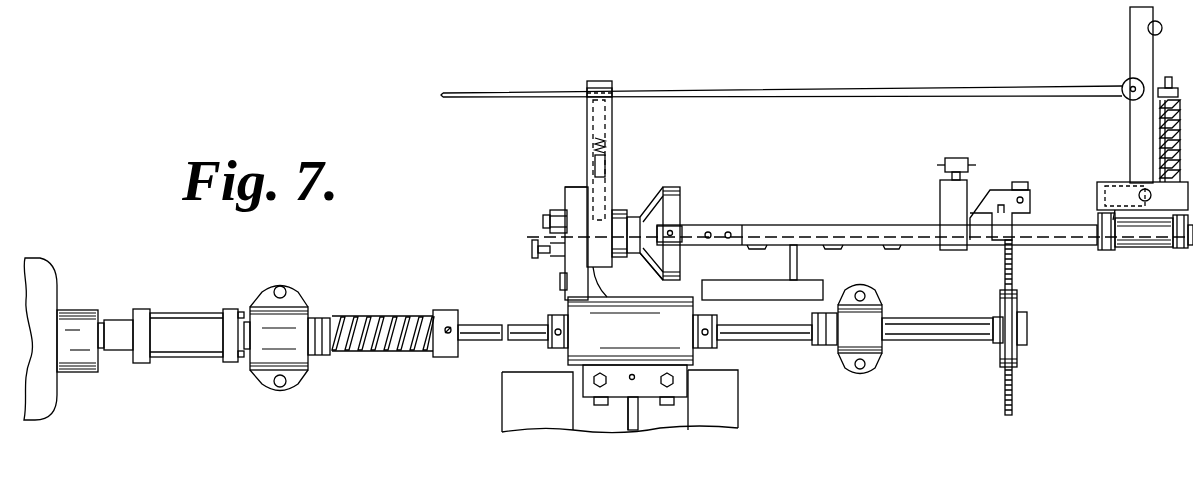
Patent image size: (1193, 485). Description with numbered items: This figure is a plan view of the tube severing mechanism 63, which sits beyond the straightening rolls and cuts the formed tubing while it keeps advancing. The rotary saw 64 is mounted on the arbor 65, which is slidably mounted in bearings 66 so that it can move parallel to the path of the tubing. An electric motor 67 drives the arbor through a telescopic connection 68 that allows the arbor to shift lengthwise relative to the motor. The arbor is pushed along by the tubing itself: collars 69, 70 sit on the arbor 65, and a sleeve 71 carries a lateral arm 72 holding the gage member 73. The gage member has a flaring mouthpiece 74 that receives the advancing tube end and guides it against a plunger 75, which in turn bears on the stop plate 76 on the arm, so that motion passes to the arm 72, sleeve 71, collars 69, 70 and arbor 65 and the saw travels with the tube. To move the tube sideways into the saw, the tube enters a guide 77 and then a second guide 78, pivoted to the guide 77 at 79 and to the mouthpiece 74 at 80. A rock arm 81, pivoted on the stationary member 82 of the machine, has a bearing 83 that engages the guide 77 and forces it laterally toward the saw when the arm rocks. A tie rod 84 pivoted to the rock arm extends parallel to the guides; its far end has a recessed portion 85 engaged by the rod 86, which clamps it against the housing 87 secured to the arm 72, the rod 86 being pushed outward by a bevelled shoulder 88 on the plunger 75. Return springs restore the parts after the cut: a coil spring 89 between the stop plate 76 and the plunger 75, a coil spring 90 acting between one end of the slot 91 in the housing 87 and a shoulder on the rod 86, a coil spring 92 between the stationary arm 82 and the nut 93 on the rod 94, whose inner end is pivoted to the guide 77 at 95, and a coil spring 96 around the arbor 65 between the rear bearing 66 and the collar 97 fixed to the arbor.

The tube severing mechanism 63 is at (776, 358).
The rotary saw 64 is at (1012, 402).
The arbor 65 is at (918, 330).
The bearings 66 is at (262, 348).
The electric motor 67 is at (73, 383).
The telescopic connection 68 is at (178, 353).
The collar 69 is at (557, 350).
The collar 70 is at (707, 350).
The sleeve 71 is at (642, 350).
The lateral arm 72 is at (585, 290).
The gage member 73 is at (640, 200).
The flaring mouthpiece 74 is at (668, 205).
The plunger 75 is at (665, 252).
The stop plate 76 is at (550, 227).
The guide 77 is at (1128, 250).
The second guide 78 is at (830, 225).
The pivot 79 is at (1022, 198).
The pivot 80 is at (672, 236).
The rock arm 81 is at (1132, 42).
The stationary member 82 is at (1170, 198).
The bearing 83 is at (1097, 198).
The tie rod 84 is at (887, 92).
The recessed portion 85 is at (612, 93).
The rod 86 is at (606, 120).
The housing 87 is at (593, 112).
The bevelled shoulder 88 is at (582, 174).
The coil spring 89 is at (527, 242).
The coil spring 90 is at (595, 145).
The slot 91 is at (606, 165).
The coil spring 92 is at (1160, 116).
The nut 93 is at (1143, 97).
The rod 94 is at (1165, 128).
The pivot 95 is at (1175, 250).
The coil spring 96 is at (378, 353).
The collar 97 is at (450, 357).